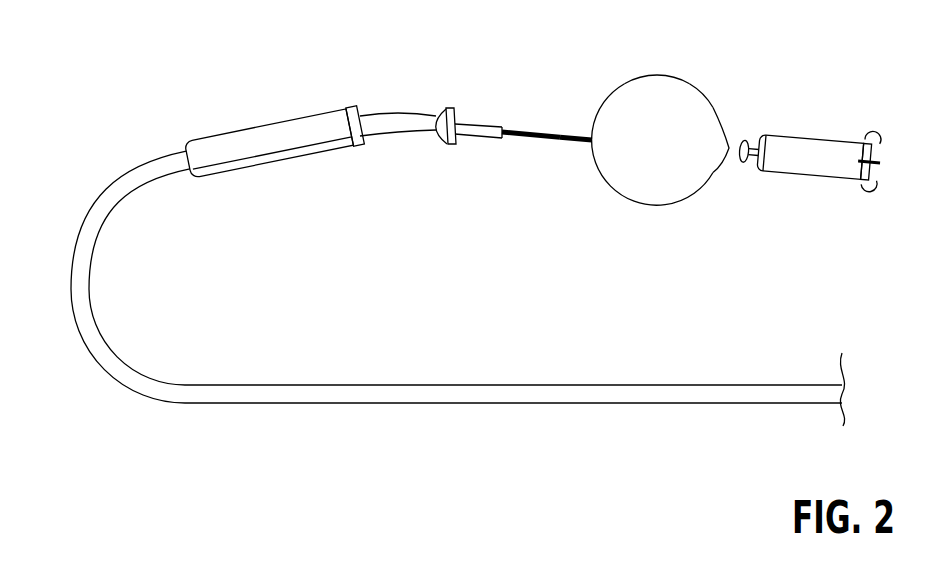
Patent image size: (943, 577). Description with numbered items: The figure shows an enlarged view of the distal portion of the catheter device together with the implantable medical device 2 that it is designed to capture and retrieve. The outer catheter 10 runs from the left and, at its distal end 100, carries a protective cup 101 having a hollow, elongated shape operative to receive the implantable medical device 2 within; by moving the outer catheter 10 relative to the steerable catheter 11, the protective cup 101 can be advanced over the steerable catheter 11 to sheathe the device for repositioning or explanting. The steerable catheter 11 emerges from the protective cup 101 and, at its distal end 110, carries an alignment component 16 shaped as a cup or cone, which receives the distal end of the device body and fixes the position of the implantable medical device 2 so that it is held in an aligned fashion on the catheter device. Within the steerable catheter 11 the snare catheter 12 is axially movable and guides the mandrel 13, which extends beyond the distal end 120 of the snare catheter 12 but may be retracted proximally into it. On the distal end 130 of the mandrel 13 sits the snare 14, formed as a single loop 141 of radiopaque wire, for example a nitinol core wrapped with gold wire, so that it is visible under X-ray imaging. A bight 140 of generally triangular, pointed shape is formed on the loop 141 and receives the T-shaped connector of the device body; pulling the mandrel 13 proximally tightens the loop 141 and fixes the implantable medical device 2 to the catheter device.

The implantable medical device 2 is at (819, 147).
The outer catheter 10 is at (541, 404).
The steerable catheter 11 is at (383, 114).
The snare catheter 12 is at (482, 122).
The mandrel 13 is at (516, 130).
The snare 14 is at (652, 216).
The alignment component 16 is at (441, 143).
The distal end 100 is at (170, 163).
The protective cup 101 is at (270, 125).
The distal end 110 is at (425, 120).
The distal end 120 is at (502, 139).
The distal end 130 is at (563, 143).
The bight 140 is at (733, 150).
The loop 141 is at (669, 78).